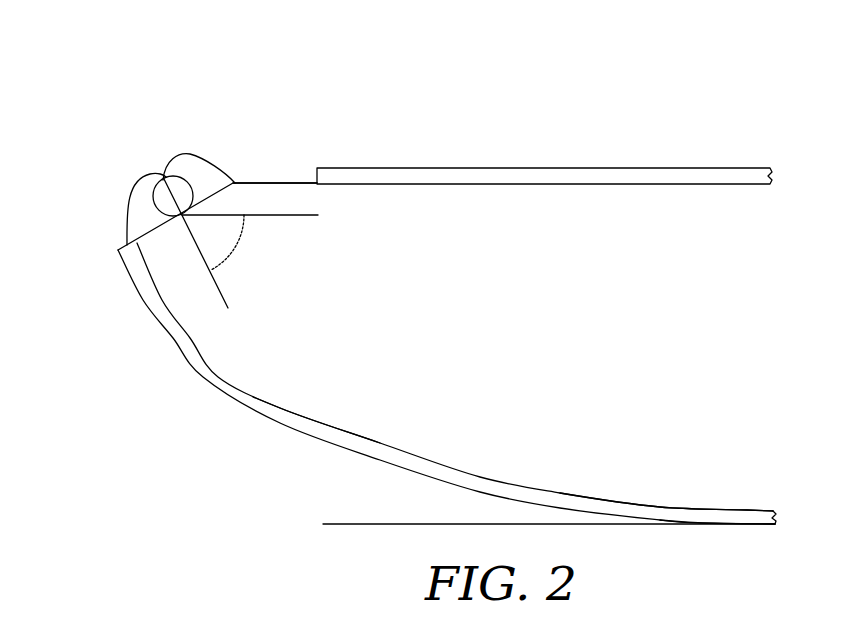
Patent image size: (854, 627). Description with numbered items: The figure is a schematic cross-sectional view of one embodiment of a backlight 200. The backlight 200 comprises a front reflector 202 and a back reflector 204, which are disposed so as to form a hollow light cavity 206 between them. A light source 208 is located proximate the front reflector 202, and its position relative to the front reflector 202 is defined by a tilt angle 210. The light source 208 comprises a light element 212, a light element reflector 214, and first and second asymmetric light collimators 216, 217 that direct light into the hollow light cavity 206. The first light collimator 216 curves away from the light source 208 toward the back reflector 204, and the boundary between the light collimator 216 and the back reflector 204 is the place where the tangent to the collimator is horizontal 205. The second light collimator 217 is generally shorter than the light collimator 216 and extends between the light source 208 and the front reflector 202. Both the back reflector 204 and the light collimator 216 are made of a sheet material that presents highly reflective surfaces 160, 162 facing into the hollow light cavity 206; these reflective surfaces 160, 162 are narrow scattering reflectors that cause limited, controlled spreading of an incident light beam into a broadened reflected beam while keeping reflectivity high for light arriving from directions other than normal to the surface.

The reflective surface 160 is at (662, 508).
The reflective surface 162 is at (287, 411).
The backlight 200 is at (165, 92).
The front reflector 202 is at (733, 172).
The back reflector 204 is at (747, 527).
The horizontal tangent 205 is at (708, 525).
The hollow light cavity 206 is at (566, 342).
The light source 208 is at (140, 167).
The tilt angle 210 is at (233, 247).
The light element 212 is at (192, 174).
The light element reflector 214 is at (125, 198).
The first asymmetric light collimator 216 is at (203, 377).
The second asymmetric light collimator 217 is at (279, 182).